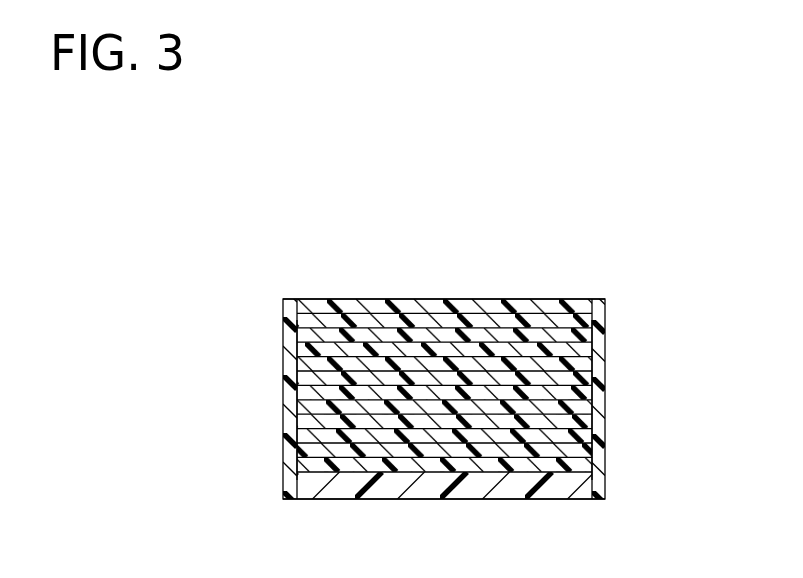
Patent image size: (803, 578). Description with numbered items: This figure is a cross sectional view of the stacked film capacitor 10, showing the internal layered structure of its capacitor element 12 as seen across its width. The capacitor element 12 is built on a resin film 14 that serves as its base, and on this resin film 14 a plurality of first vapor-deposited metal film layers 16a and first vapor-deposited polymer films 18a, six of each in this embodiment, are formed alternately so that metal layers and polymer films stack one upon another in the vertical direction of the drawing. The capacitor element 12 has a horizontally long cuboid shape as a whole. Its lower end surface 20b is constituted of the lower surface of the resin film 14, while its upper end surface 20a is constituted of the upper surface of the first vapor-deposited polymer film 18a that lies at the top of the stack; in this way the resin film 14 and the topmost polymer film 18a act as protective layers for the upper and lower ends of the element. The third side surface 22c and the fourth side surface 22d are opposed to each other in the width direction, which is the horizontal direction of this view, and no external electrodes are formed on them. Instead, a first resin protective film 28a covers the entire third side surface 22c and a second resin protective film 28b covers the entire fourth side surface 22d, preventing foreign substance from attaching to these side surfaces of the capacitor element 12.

The stacked film capacitor 10 is at (456, 361).
The capacitor element 12 is at (457, 292).
The resin film 14 is at (347, 487).
The first vapor-deposited metal film layer 16a is at (533, 316).
The first vapor-deposited polymer film 18a is at (377, 306).
The upper end surface 20a is at (492, 298).
The lower end surface 20b is at (468, 502).
The third side surface 22c is at (283, 348).
The fourth side surface 22d is at (593, 423).
The first resin protective film 28a is at (283, 337).
The second resin protective film 28b is at (600, 392).